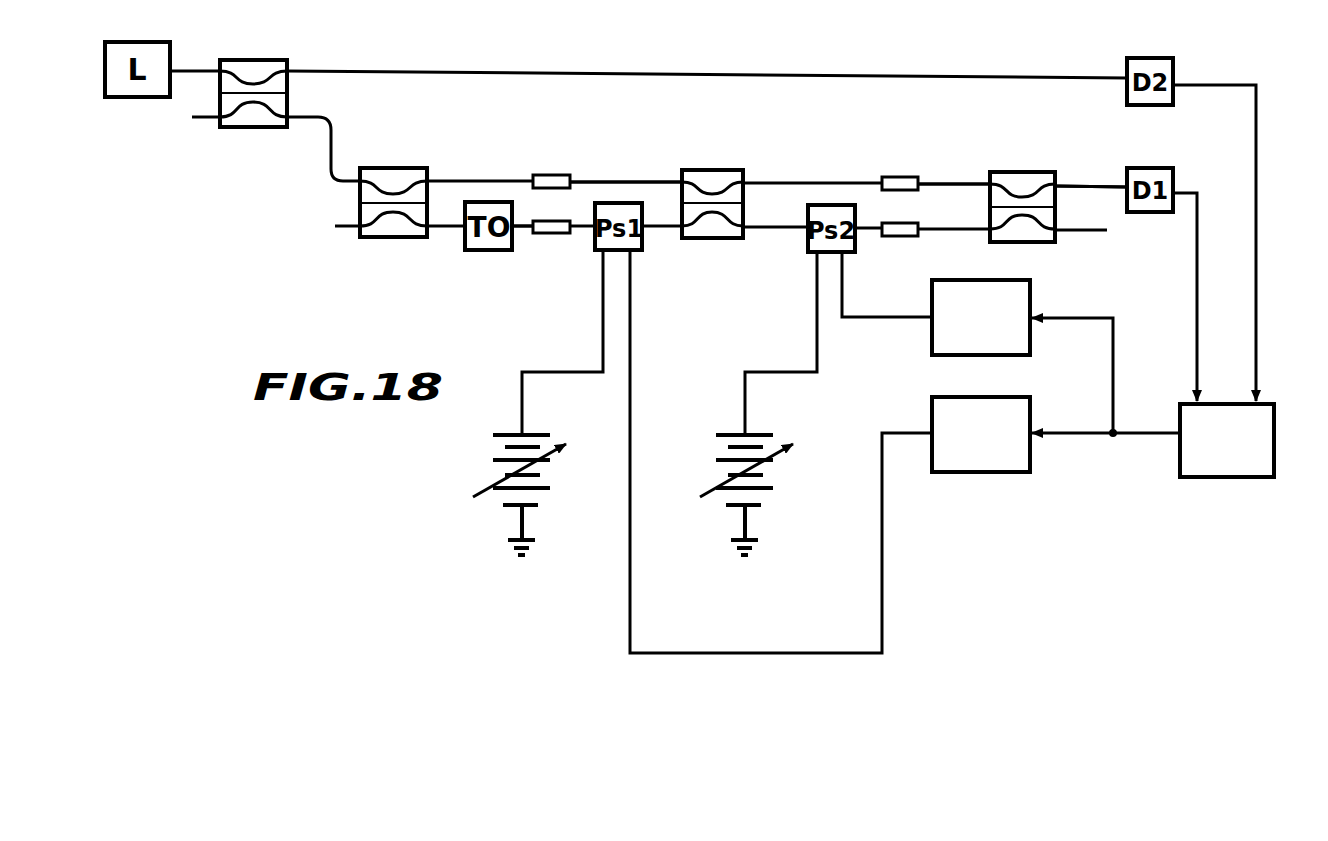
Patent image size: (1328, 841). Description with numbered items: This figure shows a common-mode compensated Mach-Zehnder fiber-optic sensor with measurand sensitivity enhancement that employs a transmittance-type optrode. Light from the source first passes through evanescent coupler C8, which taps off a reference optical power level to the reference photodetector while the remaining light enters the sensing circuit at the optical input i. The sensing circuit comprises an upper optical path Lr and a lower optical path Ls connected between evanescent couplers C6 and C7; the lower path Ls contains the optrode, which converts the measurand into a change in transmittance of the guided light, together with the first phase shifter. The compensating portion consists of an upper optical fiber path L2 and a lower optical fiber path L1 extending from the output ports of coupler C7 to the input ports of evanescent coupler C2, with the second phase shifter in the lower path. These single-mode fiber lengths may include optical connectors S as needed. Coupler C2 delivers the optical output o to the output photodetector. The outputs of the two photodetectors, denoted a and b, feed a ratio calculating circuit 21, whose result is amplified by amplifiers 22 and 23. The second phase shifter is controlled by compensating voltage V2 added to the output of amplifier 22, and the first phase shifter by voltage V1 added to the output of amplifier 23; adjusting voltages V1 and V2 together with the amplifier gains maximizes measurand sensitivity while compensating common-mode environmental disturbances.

The evanescent coupler C8 is at (248, 59).
The evanescent coupler C6 is at (393, 168).
The evanescent coupler C7 is at (713, 170).
The evanescent coupler C2 is at (1023, 172).
The optical connector S is at (553, 175).
The upper optical path Lr is at (628, 181).
The lower optical path Ls is at (515, 227).
The lower optical fiber path L1 is at (773, 230).
The upper optical fiber path L2 is at (950, 183).
The optical input i is at (338, 177).
The optical output o is at (1110, 183).
The ratio calculating circuit 21 is at (1274, 441).
The amplifier 22 is at (1032, 297).
The amplifier 23 is at (1032, 412).
The voltage V1 is at (505, 495).
The compensating voltage V2 is at (732, 495).
The output of photodetector D1 a is at (1193, 359).
The output of photodetector D2 b is at (1256, 358).